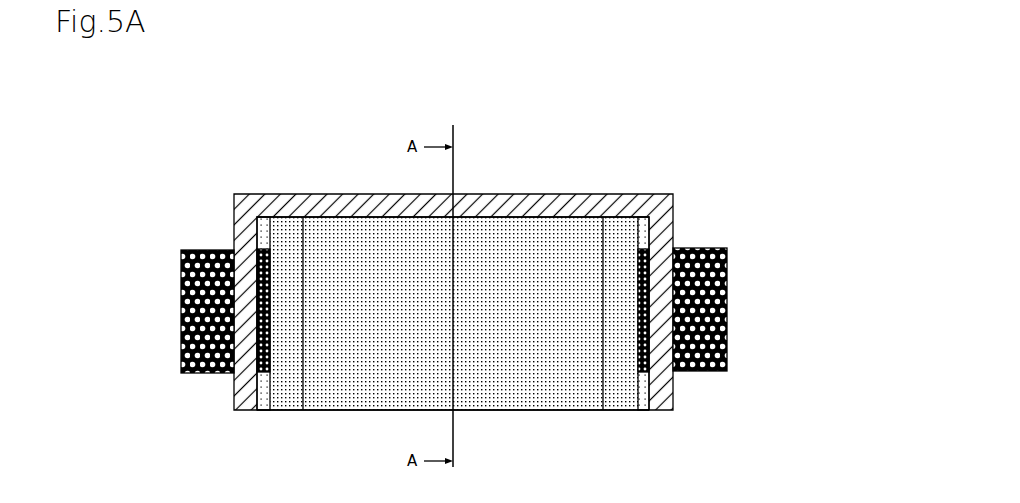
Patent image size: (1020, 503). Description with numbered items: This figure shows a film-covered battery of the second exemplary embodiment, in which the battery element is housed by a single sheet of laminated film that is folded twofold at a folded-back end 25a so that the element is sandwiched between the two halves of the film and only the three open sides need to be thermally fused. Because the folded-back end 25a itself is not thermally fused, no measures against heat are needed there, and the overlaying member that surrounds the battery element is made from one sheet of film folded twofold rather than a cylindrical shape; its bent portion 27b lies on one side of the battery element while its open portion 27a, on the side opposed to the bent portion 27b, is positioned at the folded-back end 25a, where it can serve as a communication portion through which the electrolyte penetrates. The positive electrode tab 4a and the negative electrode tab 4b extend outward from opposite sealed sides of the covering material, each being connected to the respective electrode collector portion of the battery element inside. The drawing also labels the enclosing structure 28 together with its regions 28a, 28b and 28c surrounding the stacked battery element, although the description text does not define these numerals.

The positive electrode tab 4a is at (727, 276).
The negative electrode tab 4b is at (207, 250).
The folded-back end 25a is at (568, 409).
The open portion 27a is at (513, 411).
The bent portion 27b is at (568, 215).
The housing 28 is at (473, 288).
The housing right side wall 28a is at (665, 391).
The housing left side wall 28b is at (234, 387).
The housing top wall 28c is at (527, 207).